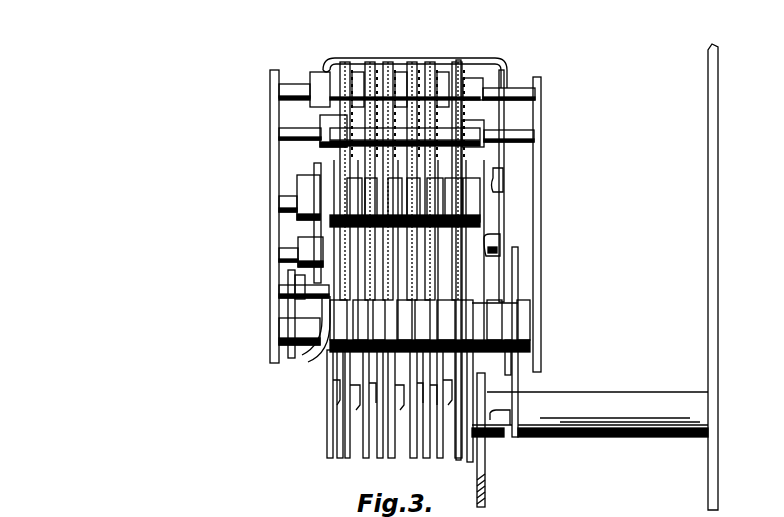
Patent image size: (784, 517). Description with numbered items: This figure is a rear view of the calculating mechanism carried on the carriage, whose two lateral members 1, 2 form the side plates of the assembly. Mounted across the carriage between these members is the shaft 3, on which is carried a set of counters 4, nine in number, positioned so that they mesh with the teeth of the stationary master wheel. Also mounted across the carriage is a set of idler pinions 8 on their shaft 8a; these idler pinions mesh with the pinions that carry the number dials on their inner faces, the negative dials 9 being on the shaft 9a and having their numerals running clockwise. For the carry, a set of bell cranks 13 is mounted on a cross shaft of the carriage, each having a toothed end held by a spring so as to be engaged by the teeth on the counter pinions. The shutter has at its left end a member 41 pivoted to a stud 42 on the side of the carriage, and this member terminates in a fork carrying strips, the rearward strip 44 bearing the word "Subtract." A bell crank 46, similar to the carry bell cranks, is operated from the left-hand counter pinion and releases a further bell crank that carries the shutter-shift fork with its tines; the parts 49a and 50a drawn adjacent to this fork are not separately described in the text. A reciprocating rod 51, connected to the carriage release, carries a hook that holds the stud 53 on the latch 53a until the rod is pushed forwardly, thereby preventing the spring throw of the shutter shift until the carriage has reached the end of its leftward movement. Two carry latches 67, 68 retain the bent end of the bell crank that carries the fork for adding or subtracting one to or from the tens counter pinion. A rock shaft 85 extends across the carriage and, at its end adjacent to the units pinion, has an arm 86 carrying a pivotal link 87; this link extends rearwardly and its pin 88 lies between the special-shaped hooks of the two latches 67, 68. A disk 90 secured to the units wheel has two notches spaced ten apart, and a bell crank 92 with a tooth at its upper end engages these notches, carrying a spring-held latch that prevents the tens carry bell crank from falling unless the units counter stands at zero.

The lateral member 1 is at (541, 222).
The lateral member 2 is at (270, 219).
The shaft 3 is at (297, 198).
The counters 4 is at (459, 240).
The idler pinions 8 is at (337, 128).
The shaft 8a is at (305, 128).
The number dials 9 is at (331, 92).
The shaft 9a is at (517, 88).
The bell cranks 13 is at (363, 452).
The member 41 is at (505, 118).
The stud 42 is at (503, 180).
The strip 44 is at (473, 62).
The bell crank 46 is at (427, 437).
The shaft 49a is at (503, 146).
The pawl 50a is at (491, 237).
The reciprocating rod 51 is at (487, 494).
The stud 53 is at (493, 437).
The latch 53a is at (470, 440).
The carry latch 67 is at (337, 457).
The carry latch 68 is at (330, 430).
The rock shaft 85 is at (295, 287).
The arm 86 is at (279, 345).
The link 87 is at (292, 355).
The pin 88 is at (318, 352).
The disk 90 is at (315, 166).
The bell crank 92 is at (298, 253).